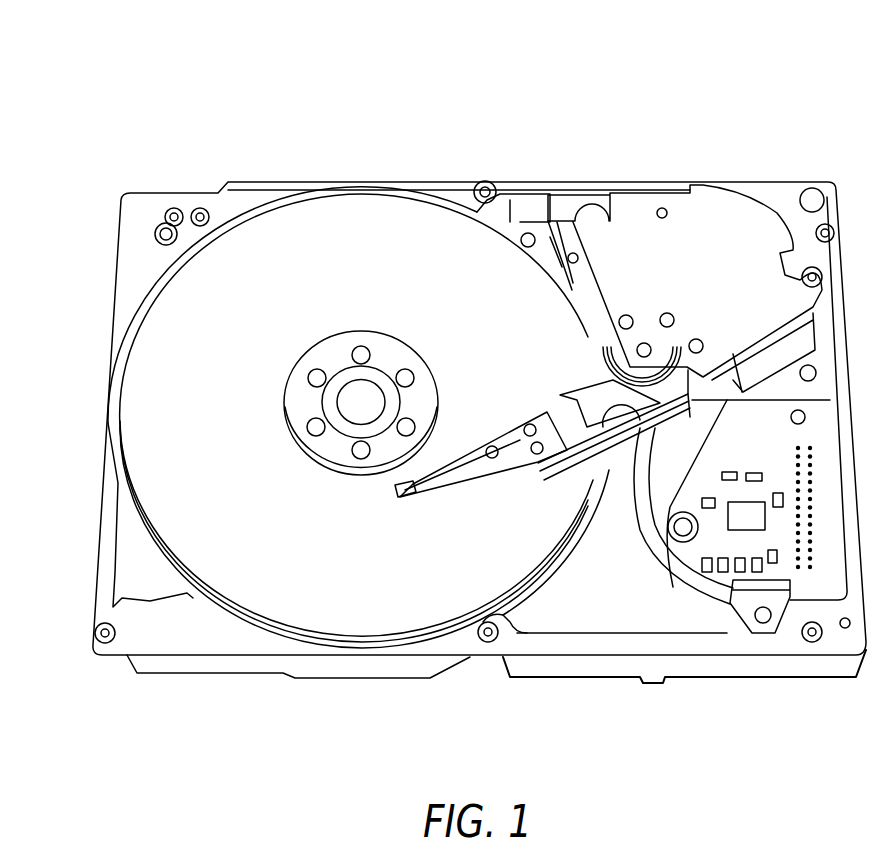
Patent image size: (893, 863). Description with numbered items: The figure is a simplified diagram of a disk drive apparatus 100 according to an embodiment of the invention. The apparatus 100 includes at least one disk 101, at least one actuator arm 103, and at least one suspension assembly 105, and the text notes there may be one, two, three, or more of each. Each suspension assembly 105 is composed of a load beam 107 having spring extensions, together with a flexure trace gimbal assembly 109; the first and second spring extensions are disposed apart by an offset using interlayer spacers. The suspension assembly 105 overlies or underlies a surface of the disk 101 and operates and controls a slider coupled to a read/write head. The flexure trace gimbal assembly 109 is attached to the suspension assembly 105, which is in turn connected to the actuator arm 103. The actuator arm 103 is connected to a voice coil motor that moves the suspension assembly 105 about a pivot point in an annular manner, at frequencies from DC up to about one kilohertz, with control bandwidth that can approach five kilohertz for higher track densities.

The disk drive apparatus 100 is at (693, 52).
The disk 101 is at (178, 306).
The actuator arm 103 is at (600, 430).
The suspension assembly 105 is at (460, 514).
The load beam 107 is at (462, 456).
The flexure trace gimbal assembly 109 is at (395, 488).